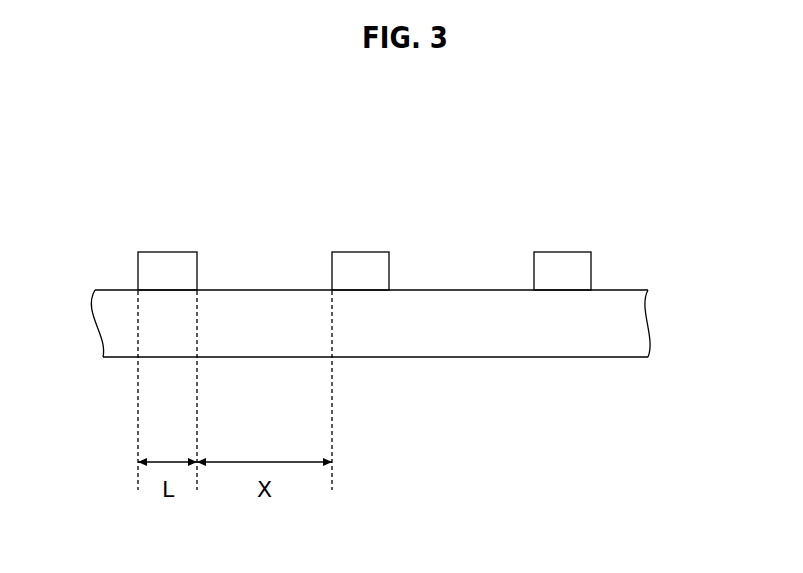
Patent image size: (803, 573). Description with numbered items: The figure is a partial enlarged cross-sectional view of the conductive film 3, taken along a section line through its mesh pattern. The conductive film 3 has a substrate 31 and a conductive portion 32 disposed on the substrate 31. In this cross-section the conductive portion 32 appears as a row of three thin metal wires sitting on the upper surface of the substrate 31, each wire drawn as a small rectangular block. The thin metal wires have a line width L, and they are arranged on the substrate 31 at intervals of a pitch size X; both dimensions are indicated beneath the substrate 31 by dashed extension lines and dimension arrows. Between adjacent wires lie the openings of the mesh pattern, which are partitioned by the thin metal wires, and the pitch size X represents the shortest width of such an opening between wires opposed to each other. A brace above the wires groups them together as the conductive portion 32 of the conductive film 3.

The conductive film 3 is at (692, 157).
The substrate 31 is at (623, 318).
The conductive portion 32 is at (590, 133).